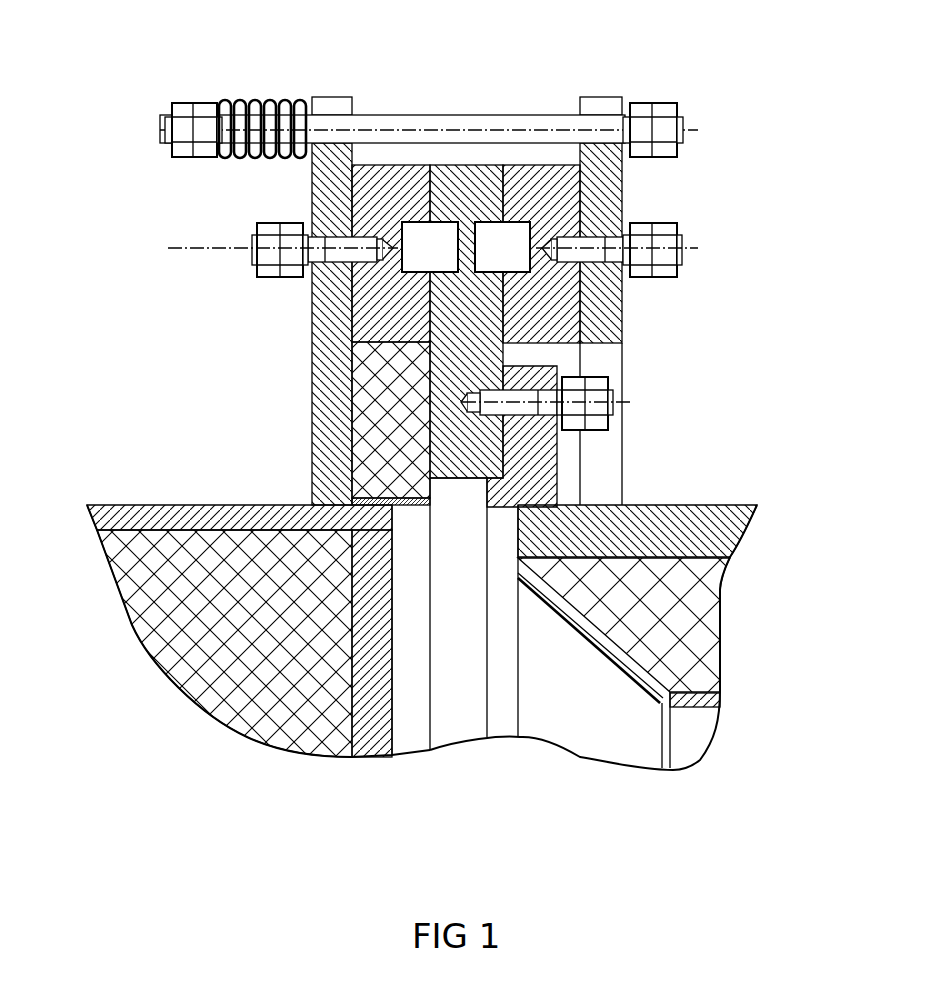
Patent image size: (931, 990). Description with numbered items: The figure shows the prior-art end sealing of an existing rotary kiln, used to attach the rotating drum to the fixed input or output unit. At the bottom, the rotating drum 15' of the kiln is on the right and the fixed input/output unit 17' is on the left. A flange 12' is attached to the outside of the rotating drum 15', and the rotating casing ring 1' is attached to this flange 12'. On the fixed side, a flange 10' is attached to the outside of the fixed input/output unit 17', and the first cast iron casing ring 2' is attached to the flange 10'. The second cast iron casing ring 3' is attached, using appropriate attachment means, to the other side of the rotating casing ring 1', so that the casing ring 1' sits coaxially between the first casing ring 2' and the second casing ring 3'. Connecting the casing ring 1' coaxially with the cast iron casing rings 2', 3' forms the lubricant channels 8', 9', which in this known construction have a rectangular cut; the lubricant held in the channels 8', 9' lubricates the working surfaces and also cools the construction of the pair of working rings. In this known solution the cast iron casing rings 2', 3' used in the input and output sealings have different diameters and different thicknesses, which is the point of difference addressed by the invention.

The casing ring 1' is at (466, 242).
The first casing ring 2' is at (391, 174).
The second casing ring 3' is at (541, 174).
The lubricant channel 8' is at (304, 303).
The lubricant channel 9' is at (623, 295).
The flange 10' is at (377, 301).
The flange 12' is at (638, 436).
The rotating drum 15' is at (593, 681).
The fixed input/output unit 17' is at (258, 681).